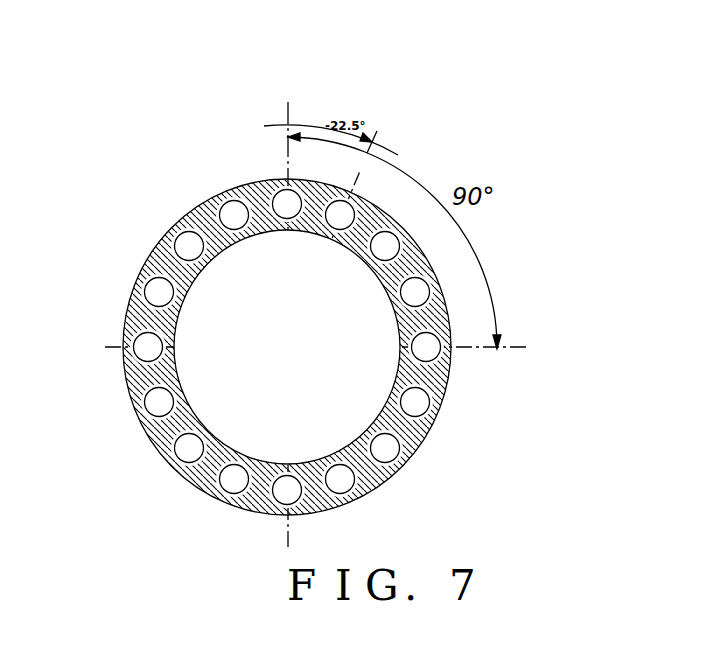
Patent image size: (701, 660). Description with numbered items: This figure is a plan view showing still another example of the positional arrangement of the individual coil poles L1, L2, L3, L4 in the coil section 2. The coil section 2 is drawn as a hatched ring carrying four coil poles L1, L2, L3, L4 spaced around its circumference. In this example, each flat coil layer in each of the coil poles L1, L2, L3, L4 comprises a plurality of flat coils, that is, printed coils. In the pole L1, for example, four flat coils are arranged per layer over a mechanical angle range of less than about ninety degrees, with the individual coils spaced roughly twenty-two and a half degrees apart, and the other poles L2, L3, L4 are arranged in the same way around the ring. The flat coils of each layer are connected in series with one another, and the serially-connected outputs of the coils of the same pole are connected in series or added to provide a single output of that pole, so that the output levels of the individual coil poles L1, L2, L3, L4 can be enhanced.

The coil section 2 is at (244, 347).
The coil pole L1 is at (351, 248).
The coil pole L2 is at (383, 417).
The coil pole L3 is at (221, 447).
The coil pole L4 is at (191, 276).